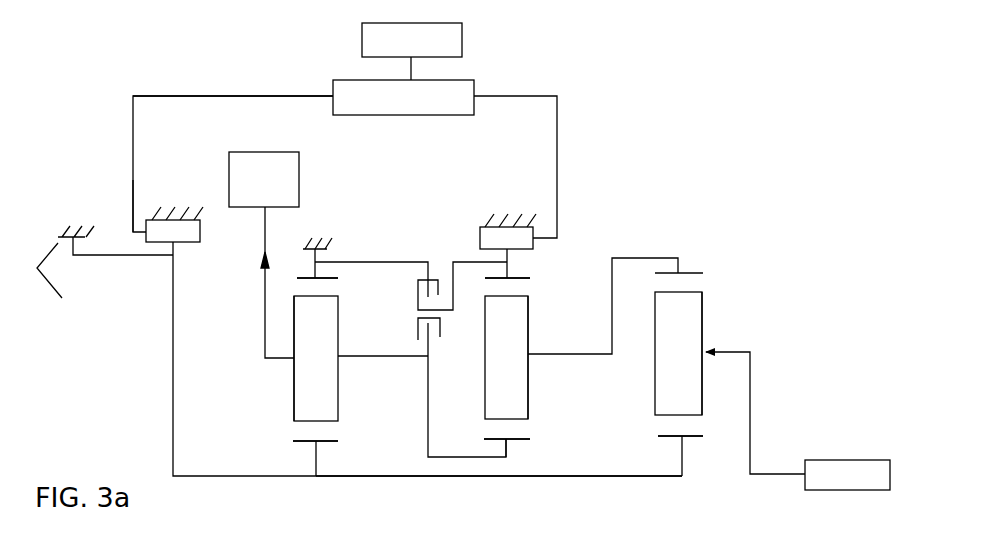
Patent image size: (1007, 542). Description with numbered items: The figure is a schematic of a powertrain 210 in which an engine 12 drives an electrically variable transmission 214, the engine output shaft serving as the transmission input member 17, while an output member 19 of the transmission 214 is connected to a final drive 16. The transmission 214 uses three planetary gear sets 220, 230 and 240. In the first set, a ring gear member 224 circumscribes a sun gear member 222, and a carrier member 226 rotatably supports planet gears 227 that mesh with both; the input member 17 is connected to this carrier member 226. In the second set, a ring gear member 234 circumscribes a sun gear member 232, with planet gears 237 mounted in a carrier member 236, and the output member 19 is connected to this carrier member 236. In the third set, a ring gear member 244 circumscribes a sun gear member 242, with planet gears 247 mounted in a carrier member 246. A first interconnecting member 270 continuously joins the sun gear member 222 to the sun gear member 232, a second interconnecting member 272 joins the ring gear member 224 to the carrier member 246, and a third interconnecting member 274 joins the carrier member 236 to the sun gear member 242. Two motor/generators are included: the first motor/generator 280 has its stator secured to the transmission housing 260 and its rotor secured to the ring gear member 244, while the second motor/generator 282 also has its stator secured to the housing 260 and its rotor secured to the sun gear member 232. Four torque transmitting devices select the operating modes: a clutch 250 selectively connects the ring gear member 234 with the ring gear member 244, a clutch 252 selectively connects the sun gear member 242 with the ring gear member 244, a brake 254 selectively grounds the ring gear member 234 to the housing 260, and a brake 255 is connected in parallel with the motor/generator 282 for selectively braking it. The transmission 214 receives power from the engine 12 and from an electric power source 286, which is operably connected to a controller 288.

The powertrain 210 is at (92, 60).
The electrically variable transmission 214 is at (92, 113).
The transmission housing 260 is at (82, 233).
The final drive 16 is at (275, 152).
The electric power source 286 is at (463, 38).
The controller 288 is at (476, 90).
The first motor/generator 280 is at (470, 237).
The second motor/generator 282 is at (201, 241).
The brake 254 is at (340, 240).
The brake 255 is at (105, 282).
The output member 19 is at (264, 233).
The ring gear member 234 is at (297, 278).
The carrier member 236 is at (292, 362).
The planet gears 237 is at (317, 358).
The planetary gear set 230 is at (312, 445).
The sun gear member 232 is at (330, 443).
The clutch 250 is at (417, 308).
The clutch 252 is at (434, 337).
The ring gear member 244 is at (522, 275).
The carrier member 246 is at (534, 362).
The planet gears 247 is at (508, 357).
The planetary gear set 240 is at (503, 443).
The sun gear member 242 is at (512, 441).
The second interconnecting member 272 is at (652, 257).
The third interconnecting member 274 is at (367, 358).
The first interconnecting member 270 is at (583, 475).
The ring gear member 224 is at (690, 271).
The carrier member 226 is at (708, 345).
The planet gears 227 is at (678, 353).
The planetary gear set 220 is at (679, 440).
The sun gear member 222 is at (695, 440).
The engine 12 is at (826, 460).
The input member 17 is at (782, 476).